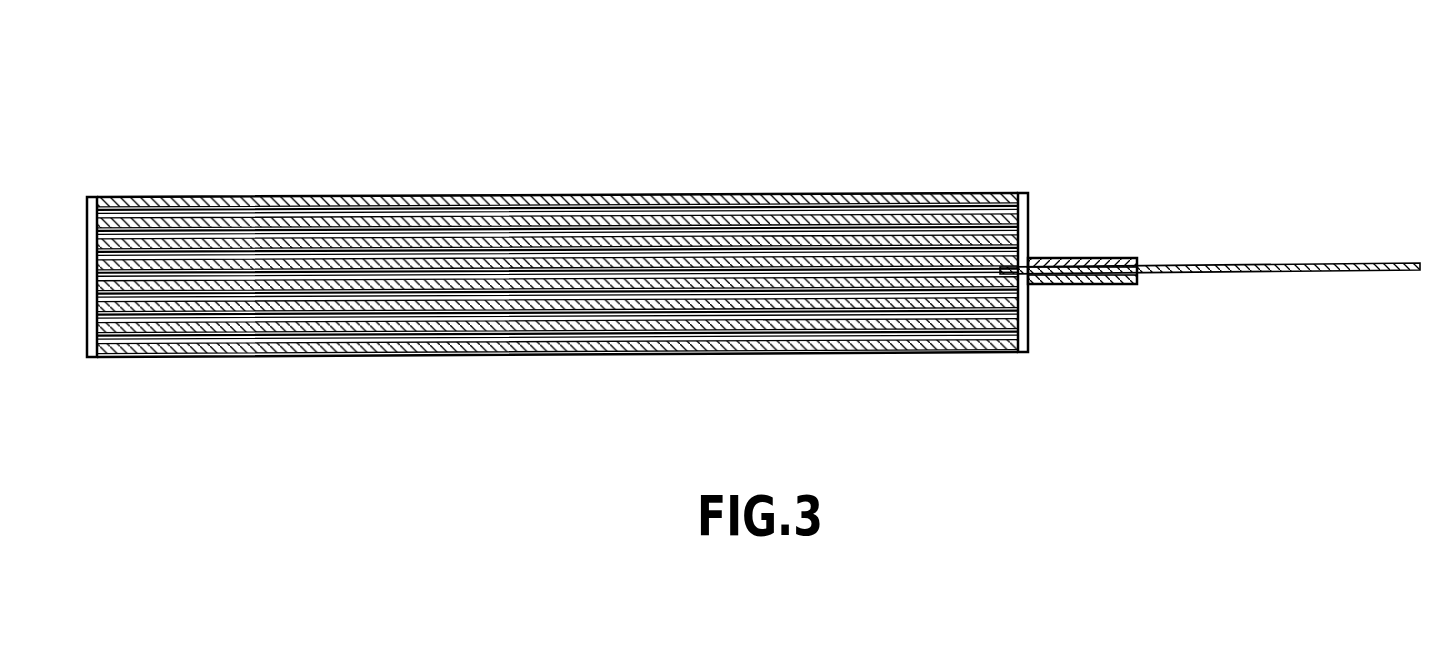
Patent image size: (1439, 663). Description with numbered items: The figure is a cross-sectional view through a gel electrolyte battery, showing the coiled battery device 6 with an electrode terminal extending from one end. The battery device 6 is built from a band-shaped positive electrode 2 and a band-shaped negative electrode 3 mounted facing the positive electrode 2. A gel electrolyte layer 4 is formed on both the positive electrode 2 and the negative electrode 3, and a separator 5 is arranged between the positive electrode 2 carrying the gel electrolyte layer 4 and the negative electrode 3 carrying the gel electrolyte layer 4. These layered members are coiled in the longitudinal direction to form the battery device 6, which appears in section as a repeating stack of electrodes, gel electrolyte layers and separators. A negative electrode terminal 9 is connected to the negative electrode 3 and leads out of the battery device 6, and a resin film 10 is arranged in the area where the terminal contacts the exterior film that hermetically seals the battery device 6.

The positive electrode 2 is at (455, 220).
The negative electrode 3 is at (608, 200).
The gel electrolyte layer 4 is at (537, 198).
The separator 5 is at (378, 205).
The battery device 6 is at (989, 126).
The negative electrode terminal 9 is at (1326, 265).
The resin film 10 is at (1087, 258).